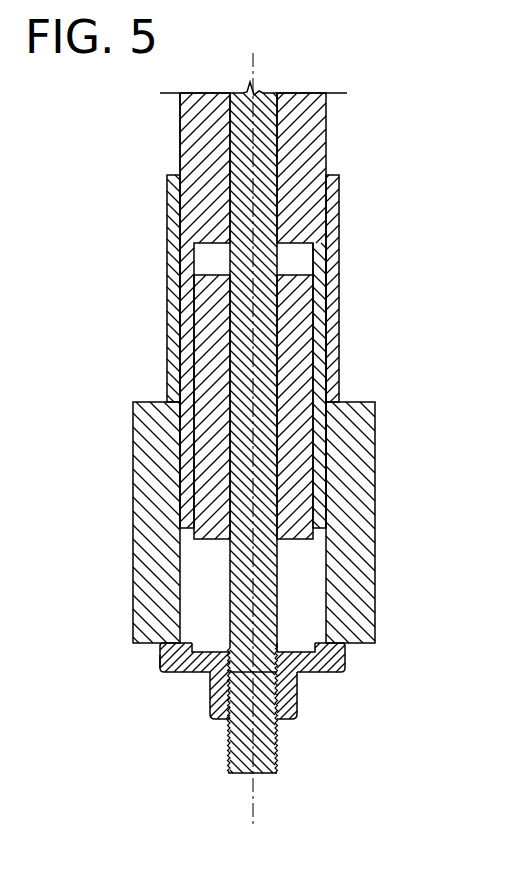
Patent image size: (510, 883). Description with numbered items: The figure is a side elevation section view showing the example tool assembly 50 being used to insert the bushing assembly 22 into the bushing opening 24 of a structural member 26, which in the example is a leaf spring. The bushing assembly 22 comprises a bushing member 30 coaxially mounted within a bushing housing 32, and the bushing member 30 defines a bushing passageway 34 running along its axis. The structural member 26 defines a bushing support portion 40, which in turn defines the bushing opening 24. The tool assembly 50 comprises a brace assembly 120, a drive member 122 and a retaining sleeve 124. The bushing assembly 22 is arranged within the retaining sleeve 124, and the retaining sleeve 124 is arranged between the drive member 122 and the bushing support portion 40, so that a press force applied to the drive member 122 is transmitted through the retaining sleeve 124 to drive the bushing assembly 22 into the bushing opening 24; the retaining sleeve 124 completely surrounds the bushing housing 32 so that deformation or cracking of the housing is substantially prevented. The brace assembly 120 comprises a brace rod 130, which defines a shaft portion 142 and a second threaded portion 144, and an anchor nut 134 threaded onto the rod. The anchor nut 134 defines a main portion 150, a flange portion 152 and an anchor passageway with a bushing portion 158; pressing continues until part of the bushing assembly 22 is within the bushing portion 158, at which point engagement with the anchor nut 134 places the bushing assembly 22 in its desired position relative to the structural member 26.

The tool assembly 50 is at (168, 122).
The drive member 122 is at (177, 150).
The bushing assembly 22 is at (176, 311).
The retaining sleeve 124 is at (340, 207).
The bushing member 30 is at (300, 304).
The bushing housing 32 is at (327, 338).
The bushing passageway 34 is at (268, 354).
The bushing opening 24 is at (305, 566).
The shaft portion 142 is at (263, 596).
The bushing support portion 40 is at (129, 443).
The structural member 26 is at (357, 487).
The flange portion 152 is at (338, 657).
The bushing portion 158 is at (294, 648).
The anchor nut 134 is at (157, 673).
The main portion 150 is at (288, 697).
The brace rod 130 is at (267, 733).
The second threaded portion 144 is at (265, 753).
The brace assembly 120 is at (215, 784).